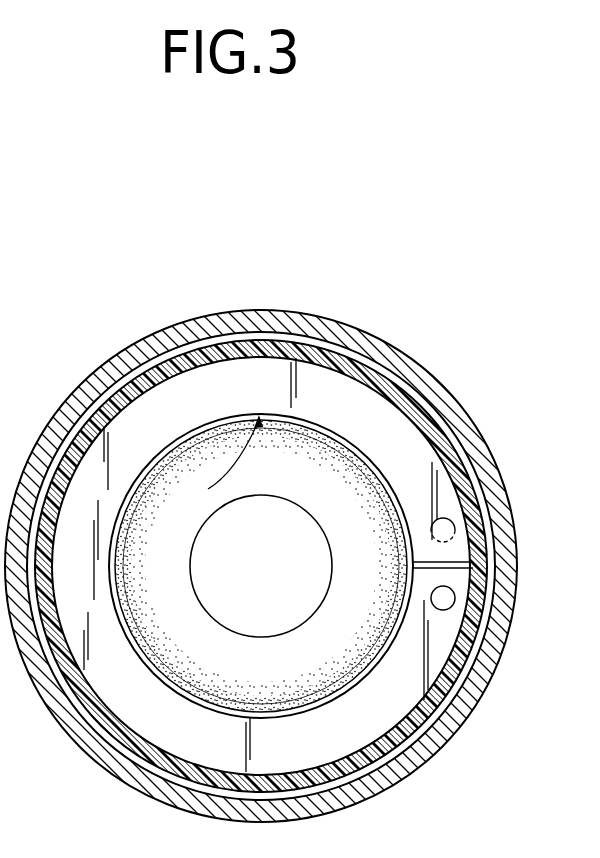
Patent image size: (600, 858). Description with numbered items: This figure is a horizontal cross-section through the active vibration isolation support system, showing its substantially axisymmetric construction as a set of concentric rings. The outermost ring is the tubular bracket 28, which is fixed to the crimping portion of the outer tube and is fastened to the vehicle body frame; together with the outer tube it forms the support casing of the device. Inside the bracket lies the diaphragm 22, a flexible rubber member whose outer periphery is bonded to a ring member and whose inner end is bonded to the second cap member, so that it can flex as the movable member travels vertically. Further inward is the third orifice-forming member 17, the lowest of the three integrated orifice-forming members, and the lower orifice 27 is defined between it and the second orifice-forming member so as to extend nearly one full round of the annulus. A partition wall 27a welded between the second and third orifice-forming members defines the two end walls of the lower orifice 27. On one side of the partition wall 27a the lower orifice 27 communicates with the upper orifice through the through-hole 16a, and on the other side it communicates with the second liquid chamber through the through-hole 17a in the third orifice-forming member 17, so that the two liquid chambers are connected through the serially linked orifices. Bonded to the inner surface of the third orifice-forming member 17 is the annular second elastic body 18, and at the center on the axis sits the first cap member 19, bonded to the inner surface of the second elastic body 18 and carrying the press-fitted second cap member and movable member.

The tubular bracket 28 is at (400, 357).
The diaphragm 22 is at (157, 368).
The lower orifice 27 is at (232, 400).
The second elastic body 18 is at (196, 647).
The first cap member 19 is at (270, 579).
The third orifice-forming member 17 is at (215, 463).
The partition wall 27a is at (416, 574).
The through-hole 16a is at (436, 522).
The through-hole 17a is at (432, 606).